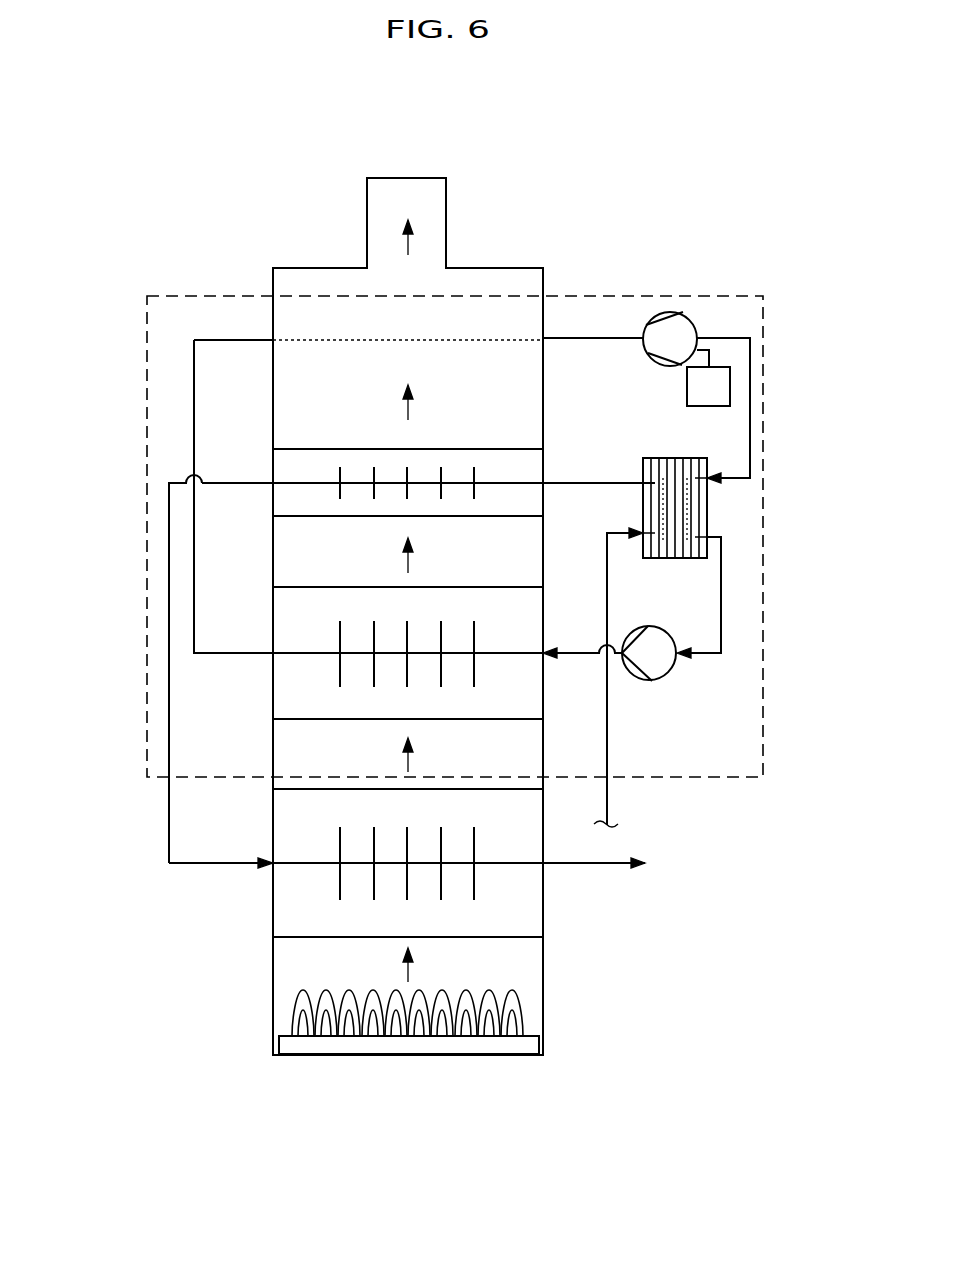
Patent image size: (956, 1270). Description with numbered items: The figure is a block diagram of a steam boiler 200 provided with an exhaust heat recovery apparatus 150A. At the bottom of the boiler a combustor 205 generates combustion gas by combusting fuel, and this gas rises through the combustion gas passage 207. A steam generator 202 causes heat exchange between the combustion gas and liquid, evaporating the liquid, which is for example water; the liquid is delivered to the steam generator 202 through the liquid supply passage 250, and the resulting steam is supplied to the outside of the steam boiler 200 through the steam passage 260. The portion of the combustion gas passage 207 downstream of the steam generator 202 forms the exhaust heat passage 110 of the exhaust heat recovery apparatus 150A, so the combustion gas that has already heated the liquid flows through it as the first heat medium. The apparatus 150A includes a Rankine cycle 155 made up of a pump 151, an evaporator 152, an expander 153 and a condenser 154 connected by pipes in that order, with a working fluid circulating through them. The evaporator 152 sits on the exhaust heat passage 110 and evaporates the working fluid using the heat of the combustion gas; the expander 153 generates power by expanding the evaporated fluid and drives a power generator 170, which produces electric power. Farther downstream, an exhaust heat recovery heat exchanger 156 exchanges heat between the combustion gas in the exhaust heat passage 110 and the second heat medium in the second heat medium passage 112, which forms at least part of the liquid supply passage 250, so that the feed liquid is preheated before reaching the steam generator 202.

The steam boiler 200 is at (455, 563).
The exhaust heat recovery apparatus 150A is at (199, 296).
The expander 153 is at (668, 312).
The power generator 170 is at (730, 387).
The condenser 154 is at (705, 493).
The pump 151 is at (677, 662).
The Rankine cycle 155 is at (183, 378).
The exhaust heat recovery heat exchanger 156 is at (293, 463).
The second heat medium passage 112 is at (169, 568).
The liquid supply passage 250 is at (607, 800).
The evaporator 152 is at (293, 686).
The exhaust heat passage 110 is at (289, 745).
The combustion gas passage 207 is at (291, 959).
The steam generator 202 is at (293, 890).
The steam passage 260 is at (595, 868).
The combustor 205 is at (527, 1044).